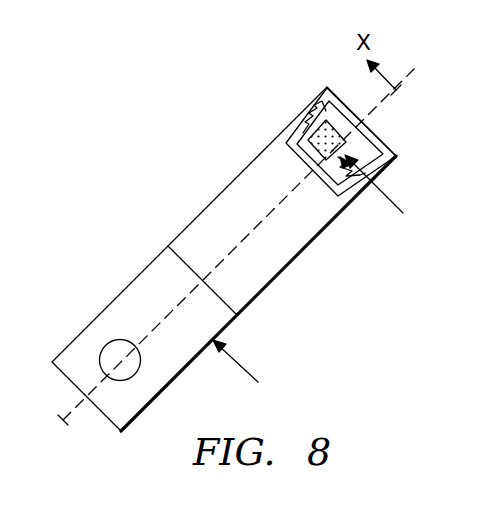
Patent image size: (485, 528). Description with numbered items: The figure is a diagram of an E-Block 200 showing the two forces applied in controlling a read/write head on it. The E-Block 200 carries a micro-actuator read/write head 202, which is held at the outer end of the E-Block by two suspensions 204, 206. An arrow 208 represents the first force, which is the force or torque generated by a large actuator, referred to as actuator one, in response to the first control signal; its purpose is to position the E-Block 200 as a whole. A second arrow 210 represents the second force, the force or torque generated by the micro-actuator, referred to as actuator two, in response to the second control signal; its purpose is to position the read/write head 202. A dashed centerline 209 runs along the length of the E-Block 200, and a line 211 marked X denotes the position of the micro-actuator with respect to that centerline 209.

The E-Block 200 is at (200, 213).
The micro-actuator read/write head 202 is at (311, 155).
The suspension 204 is at (322, 103).
The suspension 206 is at (361, 158).
The arrow 208 is at (243, 363).
The centerline 209 is at (67, 418).
The arrow 210 is at (399, 211).
The line 211 is at (388, 74).